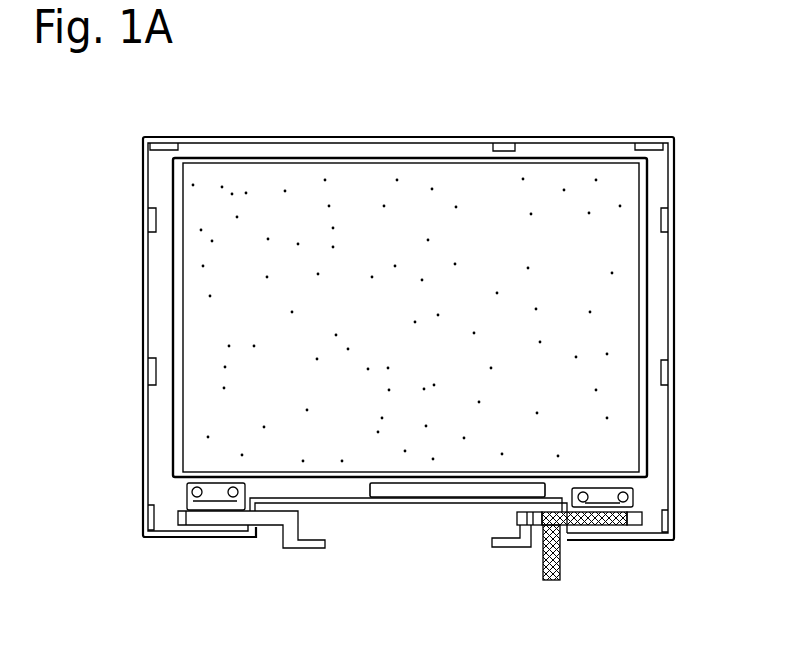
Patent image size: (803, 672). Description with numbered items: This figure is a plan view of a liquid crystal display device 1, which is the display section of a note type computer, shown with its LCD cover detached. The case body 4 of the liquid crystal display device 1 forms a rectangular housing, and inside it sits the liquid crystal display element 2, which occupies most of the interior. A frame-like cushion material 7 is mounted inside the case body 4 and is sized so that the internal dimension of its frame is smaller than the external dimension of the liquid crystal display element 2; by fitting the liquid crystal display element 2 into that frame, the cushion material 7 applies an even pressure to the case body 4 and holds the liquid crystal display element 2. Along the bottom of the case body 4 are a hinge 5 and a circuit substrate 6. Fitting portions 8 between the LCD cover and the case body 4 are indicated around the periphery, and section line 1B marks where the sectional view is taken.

The liquid crystal display device 1 is at (338, 140).
The section line for FIG. 1B is at (504, 210).
The liquid crystal display element 2 is at (572, 384).
The case body 4 is at (677, 272).
The hinge 5 is at (223, 520).
The circuit substrate 6 is at (452, 488).
The cushion material 7 is at (676, 511).
The fitting portion 8 is at (666, 210).